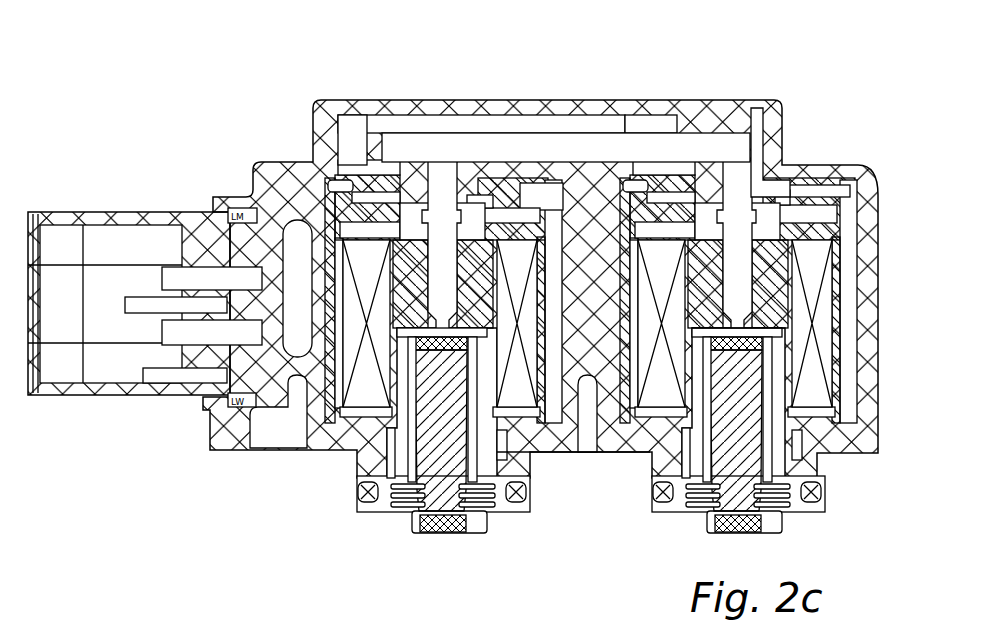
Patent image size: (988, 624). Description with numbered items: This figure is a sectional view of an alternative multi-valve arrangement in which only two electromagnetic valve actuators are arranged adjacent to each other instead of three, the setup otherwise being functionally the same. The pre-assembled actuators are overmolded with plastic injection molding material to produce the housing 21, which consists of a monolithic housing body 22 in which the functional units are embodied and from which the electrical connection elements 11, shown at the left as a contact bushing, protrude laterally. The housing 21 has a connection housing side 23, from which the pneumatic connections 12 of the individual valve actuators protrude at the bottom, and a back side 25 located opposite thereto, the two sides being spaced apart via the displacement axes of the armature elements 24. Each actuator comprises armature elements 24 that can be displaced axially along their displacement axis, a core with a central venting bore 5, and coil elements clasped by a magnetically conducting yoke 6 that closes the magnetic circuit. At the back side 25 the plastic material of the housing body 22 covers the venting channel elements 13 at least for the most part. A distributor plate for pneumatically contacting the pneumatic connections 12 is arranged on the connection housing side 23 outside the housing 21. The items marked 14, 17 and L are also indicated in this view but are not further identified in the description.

The central venting bore 5 is at (443, 262).
The magnetically conducting yoke 6 is at (345, 368).
The electrical connection elements 11 is at (107, 360).
The pneumatic connections 12 is at (392, 516).
The venting channel elements 13 is at (455, 123).
The channel 14 is at (485, 148).
The channel 17 is at (597, 127).
The housing 21 is at (765, 180).
The monolithic housing body 22 is at (572, 455).
The connection housing side 23 is at (540, 452).
The armature elements 24 is at (405, 505).
The back side 25 is at (373, 98).
The length L is at (735, 408).